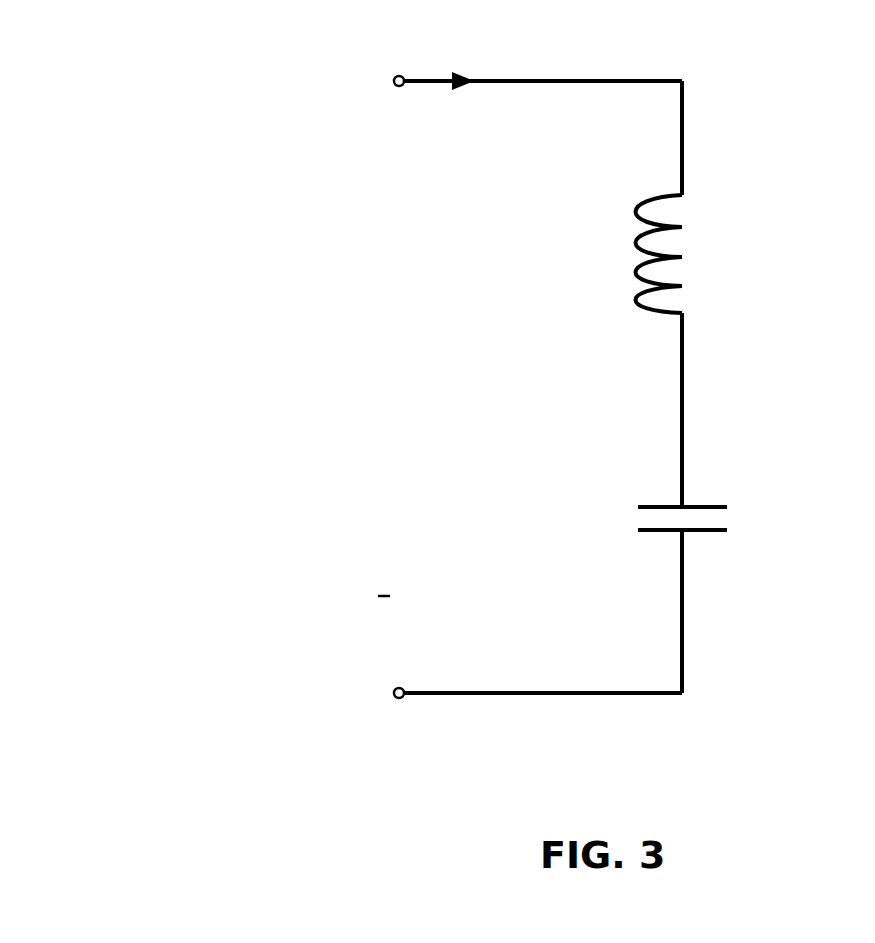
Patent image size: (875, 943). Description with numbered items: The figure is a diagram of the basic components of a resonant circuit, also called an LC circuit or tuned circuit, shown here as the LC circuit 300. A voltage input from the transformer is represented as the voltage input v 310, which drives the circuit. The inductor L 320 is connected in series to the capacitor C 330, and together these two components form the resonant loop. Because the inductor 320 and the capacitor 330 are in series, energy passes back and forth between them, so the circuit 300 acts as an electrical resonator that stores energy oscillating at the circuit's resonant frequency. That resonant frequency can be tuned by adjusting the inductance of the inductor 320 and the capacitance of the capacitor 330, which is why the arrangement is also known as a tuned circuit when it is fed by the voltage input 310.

The LC series resonant circuit 300 is at (205, 100).
The voltage across circuit terminals 310 is at (340, 403).
The inductor L 320 is at (787, 230).
The capacitor C 330 is at (805, 500).